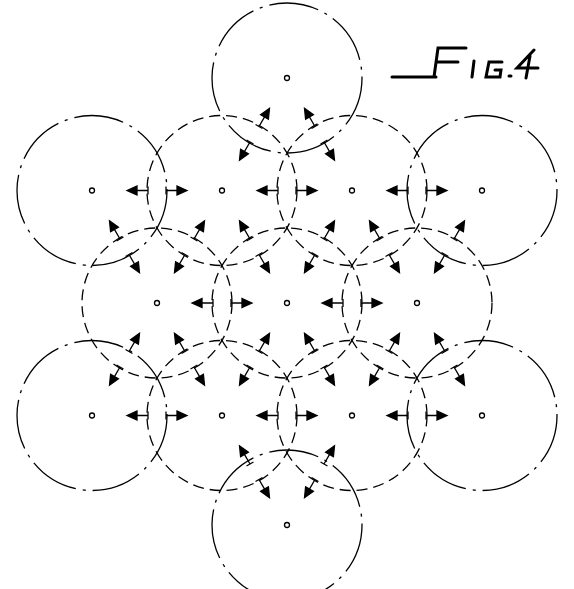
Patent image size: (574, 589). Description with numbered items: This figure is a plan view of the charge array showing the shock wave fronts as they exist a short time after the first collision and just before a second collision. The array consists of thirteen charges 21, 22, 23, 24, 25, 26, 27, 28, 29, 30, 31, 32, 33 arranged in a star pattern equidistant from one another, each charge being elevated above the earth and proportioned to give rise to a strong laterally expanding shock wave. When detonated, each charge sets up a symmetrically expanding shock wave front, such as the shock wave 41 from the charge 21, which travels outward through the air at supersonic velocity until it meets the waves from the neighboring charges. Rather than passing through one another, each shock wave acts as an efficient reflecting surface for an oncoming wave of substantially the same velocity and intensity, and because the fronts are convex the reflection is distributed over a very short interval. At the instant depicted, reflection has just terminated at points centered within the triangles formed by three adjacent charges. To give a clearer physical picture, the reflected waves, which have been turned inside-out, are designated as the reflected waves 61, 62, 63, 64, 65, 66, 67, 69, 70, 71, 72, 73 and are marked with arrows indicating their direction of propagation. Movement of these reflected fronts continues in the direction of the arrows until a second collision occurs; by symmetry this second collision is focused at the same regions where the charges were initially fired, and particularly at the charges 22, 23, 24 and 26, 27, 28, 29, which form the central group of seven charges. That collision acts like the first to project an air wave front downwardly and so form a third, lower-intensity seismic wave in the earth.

The charge 21 is at (92, 419).
The charge 22 is at (157, 305).
The charge 23 is at (288, 306).
The charge 24 is at (352, 194).
The charge 25 is at (483, 194).
The charge 26 is at (418, 306).
The charge 27 is at (352, 420).
The charge 28 is at (223, 420).
The charge 29 is at (222, 194).
The charge 30 is at (93, 193).
The charge 31 is at (290, 78).
The charge 32 is at (482, 420).
The charge 33 is at (287, 528).
The shock wave 41 is at (80, 492).
The reflected wave 61 is at (158, 441).
The reflected wave 62 is at (114, 267).
The reflected wave 63 is at (242, 267).
The reflected wave 64 is at (335, 146).
The reflected wave 65 is at (430, 173).
The reflected wave 66 is at (363, 302).
The reflected wave 67 is at (292, 446).
The reflected wave 69 is at (278, 192).
The reflected wave 70 is at (150, 177).
The reflected wave 71 is at (251, 117).
The reflected wave 72 is at (433, 433).
The reflected wave 73 is at (322, 487).